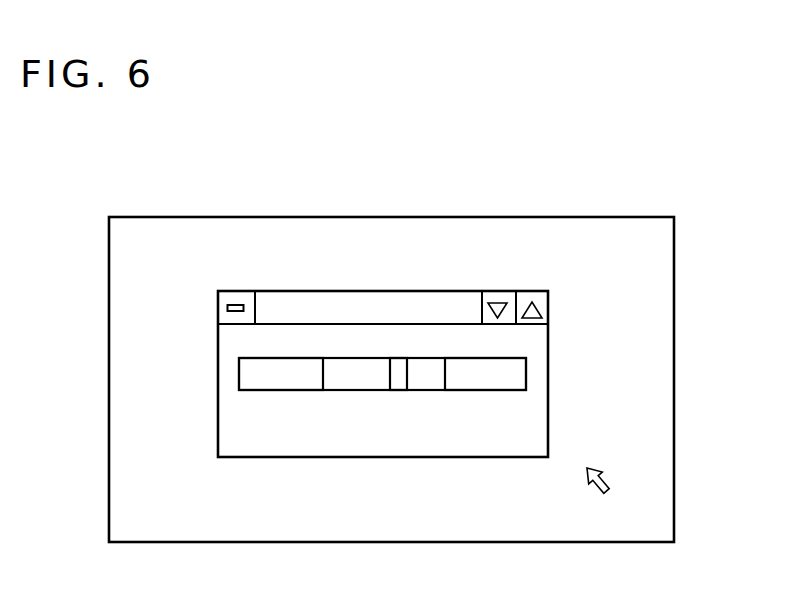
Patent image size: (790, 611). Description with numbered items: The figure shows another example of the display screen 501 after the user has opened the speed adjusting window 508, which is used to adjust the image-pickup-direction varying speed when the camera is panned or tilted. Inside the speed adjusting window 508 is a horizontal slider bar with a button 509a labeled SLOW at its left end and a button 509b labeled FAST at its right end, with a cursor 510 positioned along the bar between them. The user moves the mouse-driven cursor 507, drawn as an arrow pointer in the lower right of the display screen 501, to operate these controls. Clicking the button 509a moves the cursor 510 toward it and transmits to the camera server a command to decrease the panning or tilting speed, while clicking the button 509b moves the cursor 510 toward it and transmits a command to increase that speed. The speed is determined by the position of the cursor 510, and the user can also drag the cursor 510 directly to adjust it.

The display screen 501 is at (343, 217).
The speed adjusting window 508 is at (355, 291).
The button 509a is at (282, 392).
The button 509b is at (486, 392).
The cursor 510 is at (398, 392).
The cursor 507 is at (593, 465).